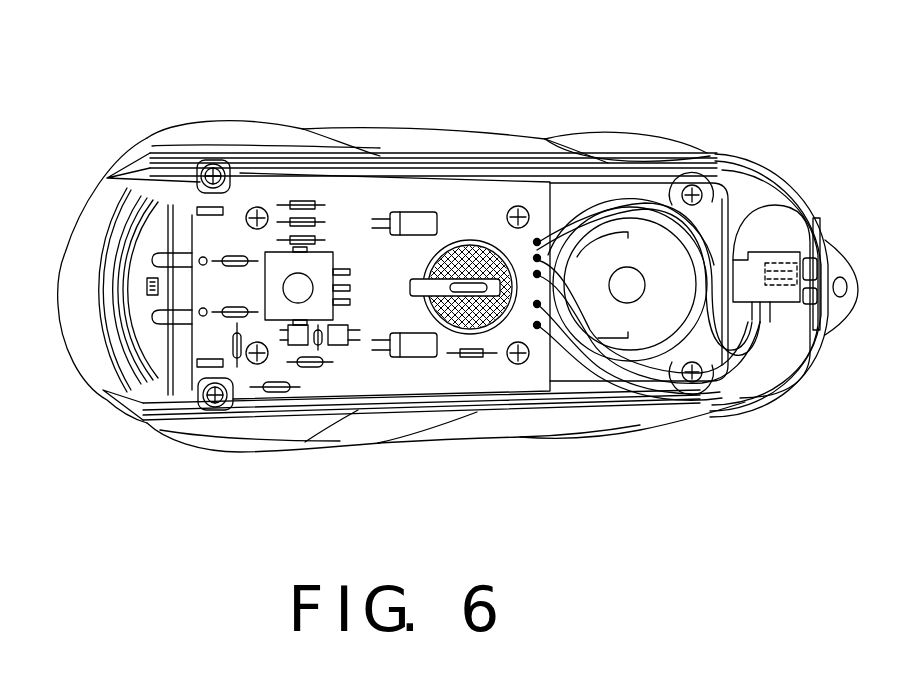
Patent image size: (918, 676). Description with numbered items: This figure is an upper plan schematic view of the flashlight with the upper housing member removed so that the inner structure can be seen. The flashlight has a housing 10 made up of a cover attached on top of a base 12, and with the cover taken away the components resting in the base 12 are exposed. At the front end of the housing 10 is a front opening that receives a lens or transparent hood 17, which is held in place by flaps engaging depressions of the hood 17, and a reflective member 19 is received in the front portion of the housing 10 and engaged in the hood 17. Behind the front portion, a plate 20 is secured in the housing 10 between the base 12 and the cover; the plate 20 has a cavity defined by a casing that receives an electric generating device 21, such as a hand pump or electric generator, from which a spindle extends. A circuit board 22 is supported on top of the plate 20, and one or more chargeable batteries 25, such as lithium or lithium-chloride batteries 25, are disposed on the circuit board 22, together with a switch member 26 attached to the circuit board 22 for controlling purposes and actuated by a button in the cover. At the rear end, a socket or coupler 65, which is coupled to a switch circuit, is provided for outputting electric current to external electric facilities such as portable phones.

The housing 10 is at (145, 117).
The base 12 is at (483, 410).
The hood 17 is at (74, 303).
The reflective member 19 is at (125, 228).
The plate 20 is at (585, 378).
The electric generating device 21 is at (648, 230).
The circuit board 22 is at (362, 385).
The chargeable battery 25 is at (478, 232).
The switch member 26 is at (305, 280).
The coupler 65 is at (826, 243).